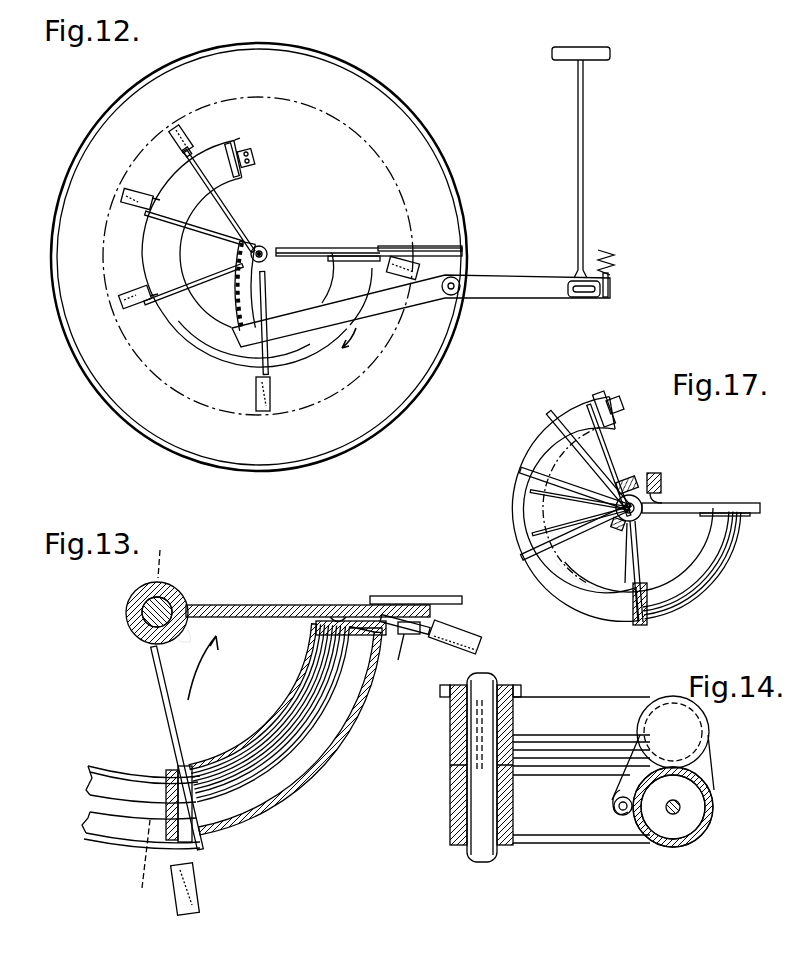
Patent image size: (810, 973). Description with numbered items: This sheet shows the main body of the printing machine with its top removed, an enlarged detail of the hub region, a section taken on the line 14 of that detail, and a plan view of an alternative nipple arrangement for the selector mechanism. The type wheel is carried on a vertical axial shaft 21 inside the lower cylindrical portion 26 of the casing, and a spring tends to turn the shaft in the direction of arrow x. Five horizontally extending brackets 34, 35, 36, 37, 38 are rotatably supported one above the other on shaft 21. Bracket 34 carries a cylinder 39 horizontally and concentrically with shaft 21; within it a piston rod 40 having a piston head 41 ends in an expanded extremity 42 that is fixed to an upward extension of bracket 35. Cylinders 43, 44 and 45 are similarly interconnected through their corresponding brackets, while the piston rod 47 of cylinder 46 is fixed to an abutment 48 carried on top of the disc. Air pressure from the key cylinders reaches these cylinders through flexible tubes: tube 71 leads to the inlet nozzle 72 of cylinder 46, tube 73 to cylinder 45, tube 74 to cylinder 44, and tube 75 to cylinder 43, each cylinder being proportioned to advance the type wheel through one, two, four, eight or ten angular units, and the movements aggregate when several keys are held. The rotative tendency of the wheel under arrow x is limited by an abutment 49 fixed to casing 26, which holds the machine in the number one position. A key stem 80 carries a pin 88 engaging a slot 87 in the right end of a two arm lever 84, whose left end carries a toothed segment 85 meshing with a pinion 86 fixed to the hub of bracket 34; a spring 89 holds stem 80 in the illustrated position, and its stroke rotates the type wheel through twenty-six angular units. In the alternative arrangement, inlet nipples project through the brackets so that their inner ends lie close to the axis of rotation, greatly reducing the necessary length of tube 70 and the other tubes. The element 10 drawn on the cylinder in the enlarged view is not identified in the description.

In FIG. 13, the curved rack 10 is at (264, 708).
In FIG. 13, the section line 14 is at (144, 724).
In FIG. 12, the vertical axial shaft 21 is at (384, 190).
In FIG. 17, the vertical axial shaft 21 is at (629, 508).
In FIG. 13, the vertical axial shaft 21 is at (150, 612).
In FIG. 14, the vertical axial shaft 21 is at (478, 858).
In FIG. 12, the cylindrical portion of casing 26 is at (448, 182).
In FIG. 12, the bracket 34 is at (302, 250).
In FIG. 13, the bracket 34 is at (246, 598).
In FIG. 12, the bracket 35 is at (266, 304).
In FIG. 13, the bracket 35 is at (182, 732).
In FIG. 14, the bracket 35 is at (566, 832).
In FIG. 12, the bracket 36 is at (222, 278).
In FIG. 12, the bracket 37 is at (218, 244).
In FIG. 12, the bracket 38 is at (222, 206).
In FIG. 12, the cylinder 39 is at (336, 332).
In FIG. 17, the cylinder 39 is at (722, 566).
In FIG. 13, the cylinder 39 is at (368, 698).
In FIG. 14, the cylinder 39 is at (590, 702).
In FIG. 13, the piston rod 40 is at (290, 772).
In FIG. 13, the piston head 41 is at (364, 640).
In FIG. 13, the expanded extremity 42 is at (200, 836).
In FIG. 12, the cylinder 43 is at (226, 356).
In FIG. 17, the cylinder 43 is at (606, 614).
In FIG. 13, the cylinder 43 is at (118, 842).
In FIG. 14, the cylinder 43 is at (712, 790).
In FIG. 12, the cylinder 44 is at (150, 262).
In FIG. 17, the cylinder 44 is at (520, 520).
In FIG. 12, the cylinder 45 is at (172, 186).
In FIG. 17, the cylinder 45 is at (536, 442).
In FIG. 12, the cylinder 46 is at (216, 152).
In FIG. 17, the cylinder 46 is at (590, 404).
In FIG. 12, the piston rod 47 is at (236, 142).
In FIG. 12, the abutment 48 is at (252, 152).
In FIG. 12, the abutment 49 is at (406, 250).
In FIG. 13, the abutment 49 is at (418, 592).
In FIG. 12, the tube 70 is at (420, 266).
In FIG. 17, the tube 70 is at (664, 470).
In FIG. 13, the tube 70 is at (482, 646).
In FIG. 12, the tube 71 is at (172, 132).
In FIG. 17, the tube 71 is at (630, 480).
In FIG. 12, the inlet nozzle 72 is at (186, 140).
In FIG. 12, the tube 73 is at (120, 194).
In FIG. 17, the tube 73 is at (598, 482).
In FIG. 12, the tube 74 is at (124, 306).
In FIG. 17, the tube 74 is at (600, 510).
In FIG. 12, the flexible tube 75 is at (258, 404).
In FIG. 17, the flexible tube 75 is at (616, 530).
In FIG. 13, the flexible tube 75 is at (186, 908).
In FIG. 12, the key stem 80 is at (584, 148).
In FIG. 12, the two arm lever 84 is at (432, 300).
In FIG. 12, the toothed segment 85 is at (239, 303).
In FIG. 12, the pinion 86 is at (268, 248).
In FIG. 12, the slot 87 is at (604, 296).
In FIG. 12, the pin 88 is at (573, 293).
In FIG. 12, the spring 89 is at (612, 262).
In FIG. 13, the arrow x is at (206, 660).